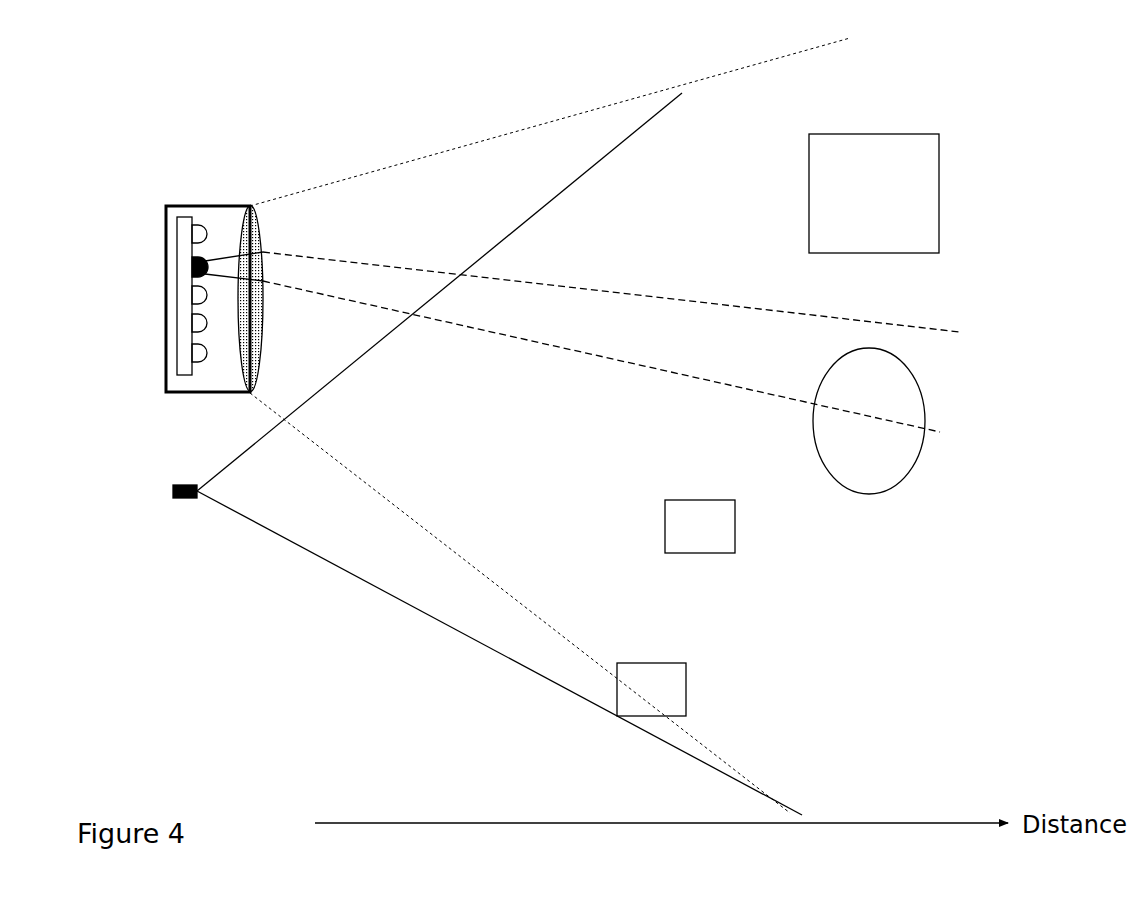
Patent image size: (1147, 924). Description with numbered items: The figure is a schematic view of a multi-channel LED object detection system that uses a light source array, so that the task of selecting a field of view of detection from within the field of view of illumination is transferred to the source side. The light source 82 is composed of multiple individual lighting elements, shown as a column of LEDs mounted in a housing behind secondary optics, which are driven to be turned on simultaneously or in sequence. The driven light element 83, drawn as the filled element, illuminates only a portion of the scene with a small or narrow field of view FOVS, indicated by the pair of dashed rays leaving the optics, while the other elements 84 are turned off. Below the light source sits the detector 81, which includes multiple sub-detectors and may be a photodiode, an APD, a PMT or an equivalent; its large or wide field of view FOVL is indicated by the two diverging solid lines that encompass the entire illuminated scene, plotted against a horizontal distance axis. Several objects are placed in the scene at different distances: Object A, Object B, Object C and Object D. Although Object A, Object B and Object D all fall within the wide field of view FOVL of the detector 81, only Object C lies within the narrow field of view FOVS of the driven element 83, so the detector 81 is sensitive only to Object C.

The detector 81 is at (173, 491).
The light source 82 is at (243, 368).
The driven light element 83 is at (195, 263).
The other lighting elements 84 is at (190, 324).
The Object A is at (617, 705).
The Object B is at (735, 540).
The Object C is at (920, 448).
The Object D is at (939, 211).
The narrow field of view of illumination FOVS is at (677, 292).
The wide field of view of detector FOVL is at (428, 622).